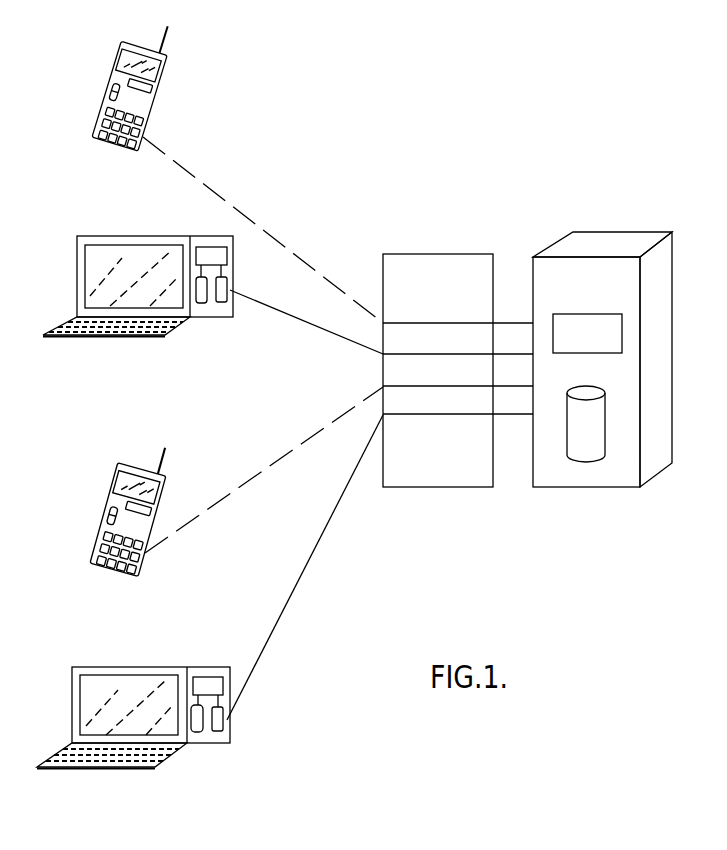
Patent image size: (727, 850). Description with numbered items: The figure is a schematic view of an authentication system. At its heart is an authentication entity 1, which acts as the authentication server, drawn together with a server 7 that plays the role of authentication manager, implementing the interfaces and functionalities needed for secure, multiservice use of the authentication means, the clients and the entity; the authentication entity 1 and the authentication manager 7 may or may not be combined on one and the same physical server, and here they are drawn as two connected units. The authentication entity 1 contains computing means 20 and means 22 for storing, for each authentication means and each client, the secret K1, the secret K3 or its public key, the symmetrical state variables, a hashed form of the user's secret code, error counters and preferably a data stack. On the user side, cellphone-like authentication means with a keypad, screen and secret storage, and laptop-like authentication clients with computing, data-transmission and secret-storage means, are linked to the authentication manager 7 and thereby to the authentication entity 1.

The authentication entity 1 is at (615, 231).
The server 7 is at (452, 253).
The computing means 20 is at (570, 350).
The means for storing 22 is at (600, 436).